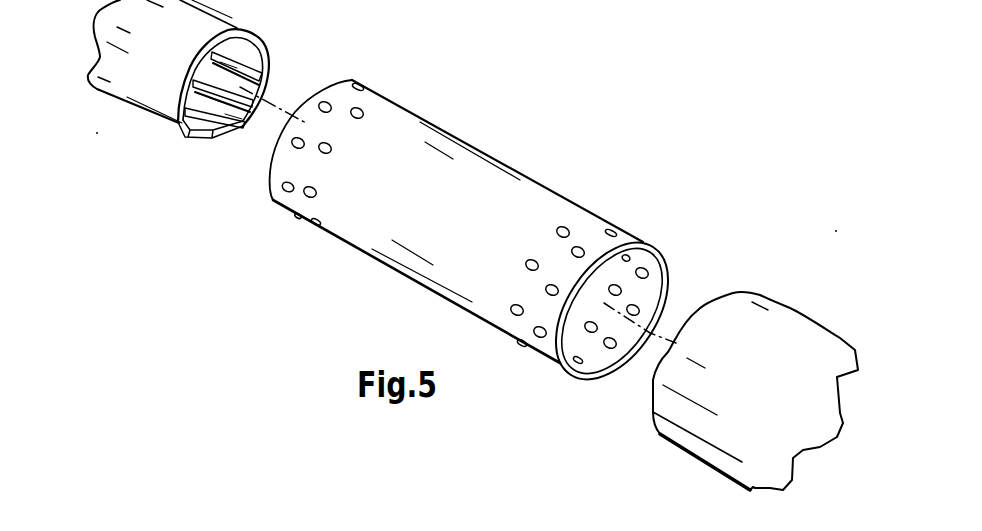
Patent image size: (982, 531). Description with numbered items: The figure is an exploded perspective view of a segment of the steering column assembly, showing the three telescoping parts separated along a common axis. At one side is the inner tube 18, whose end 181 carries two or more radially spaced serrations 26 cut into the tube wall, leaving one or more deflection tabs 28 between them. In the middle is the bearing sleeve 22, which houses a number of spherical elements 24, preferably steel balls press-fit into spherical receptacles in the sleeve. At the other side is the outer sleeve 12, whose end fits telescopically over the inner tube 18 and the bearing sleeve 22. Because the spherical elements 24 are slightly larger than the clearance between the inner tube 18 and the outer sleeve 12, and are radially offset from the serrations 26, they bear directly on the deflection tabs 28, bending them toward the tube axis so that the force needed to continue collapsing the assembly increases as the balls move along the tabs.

The outer sleeve 12 is at (709, 430).
The inner tube 18 is at (147, 80).
The clip sleeve end ring 181 is at (274, 38).
The bearing sleeve 22 is at (355, 222).
The spherical elements 24 is at (273, 198).
The serrations 26 is at (197, 141).
The deflection tabs 28 is at (240, 133).